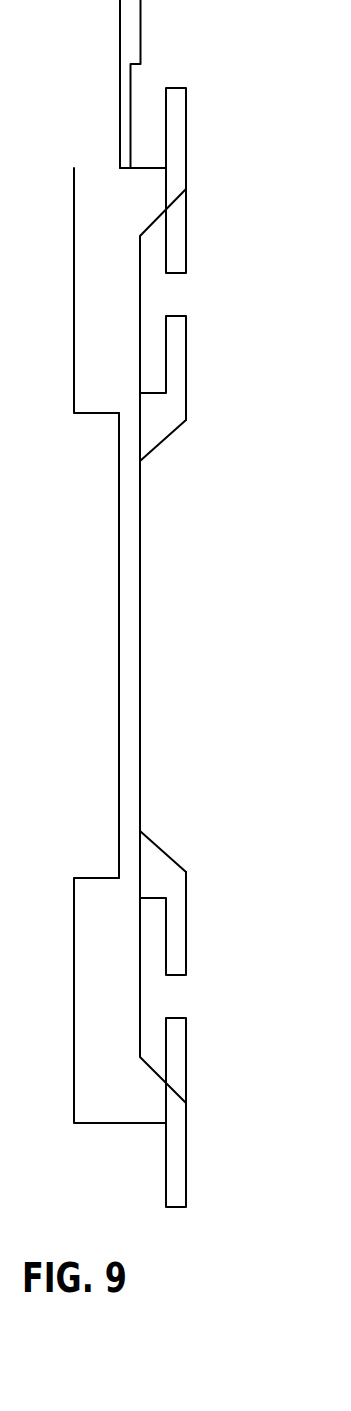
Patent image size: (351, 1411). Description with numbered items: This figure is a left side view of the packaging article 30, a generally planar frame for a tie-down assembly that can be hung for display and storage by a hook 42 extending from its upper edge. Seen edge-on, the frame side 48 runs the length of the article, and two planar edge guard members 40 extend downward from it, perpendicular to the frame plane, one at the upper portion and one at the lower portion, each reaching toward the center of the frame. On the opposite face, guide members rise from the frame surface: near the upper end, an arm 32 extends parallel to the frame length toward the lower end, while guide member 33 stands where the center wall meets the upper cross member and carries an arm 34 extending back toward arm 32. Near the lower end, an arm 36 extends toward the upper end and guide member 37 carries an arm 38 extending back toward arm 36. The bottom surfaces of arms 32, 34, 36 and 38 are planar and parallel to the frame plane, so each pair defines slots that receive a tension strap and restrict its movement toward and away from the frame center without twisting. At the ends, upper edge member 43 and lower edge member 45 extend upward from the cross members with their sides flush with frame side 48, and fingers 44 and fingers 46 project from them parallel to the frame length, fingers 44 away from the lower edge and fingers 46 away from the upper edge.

The packaging article 30 is at (0, 555).
The arm 32 is at (186, 220).
The guide member 33 is at (154, 413).
The arm 34 is at (186, 353).
The arm 36 is at (186, 1058).
The guide member 37 is at (160, 874).
The arm 38 is at (186, 932).
The edge guard member 40 is at (74, 283).
The hook 42 is at (140, 22).
The upper edge member 43 is at (138, 168).
The fingers 44 is at (186, 133).
The lower edge member 45 is at (133, 1125).
The fingers 46 is at (186, 1165).
The frame side 48 is at (119, 655).